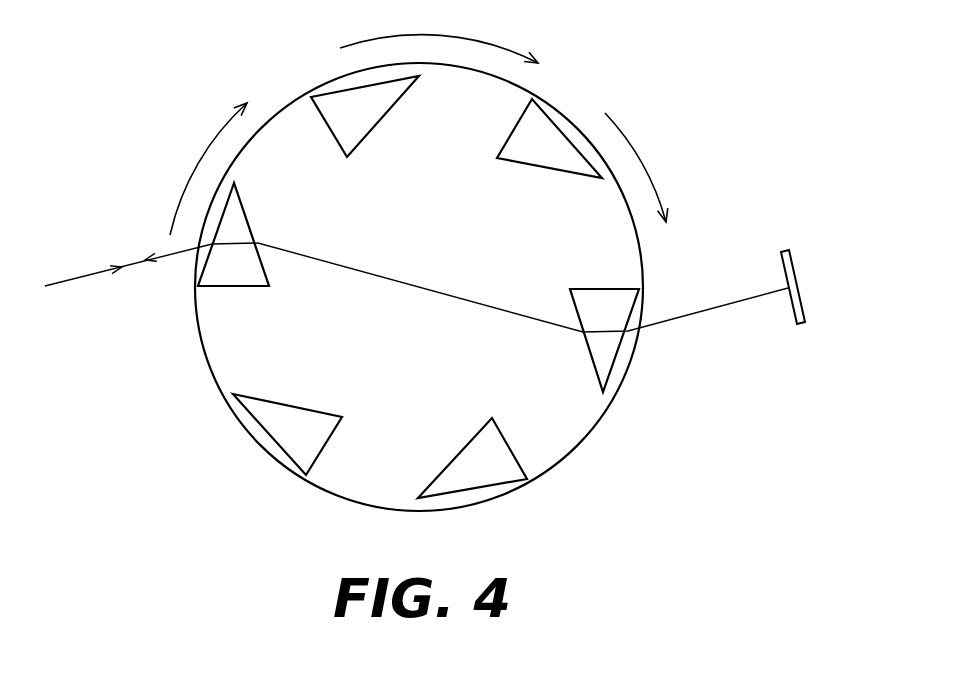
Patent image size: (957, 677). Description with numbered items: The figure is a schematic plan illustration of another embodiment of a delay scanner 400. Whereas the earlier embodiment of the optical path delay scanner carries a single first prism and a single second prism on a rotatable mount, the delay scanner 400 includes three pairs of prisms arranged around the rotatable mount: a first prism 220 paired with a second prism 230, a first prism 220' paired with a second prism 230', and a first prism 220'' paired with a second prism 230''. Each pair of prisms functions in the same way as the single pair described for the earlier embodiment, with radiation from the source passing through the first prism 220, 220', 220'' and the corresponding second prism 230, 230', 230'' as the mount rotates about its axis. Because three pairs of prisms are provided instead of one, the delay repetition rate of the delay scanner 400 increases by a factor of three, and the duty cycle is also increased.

The delay scanner 400 is at (682, 52).
The first prism 220 is at (273, 234).
The first prism 220' is at (386, 125).
The first prism 220'' is at (286, 407).
The second prism 230 is at (564, 340).
The second prism 230' is at (456, 447).
The second prism 230'' is at (537, 169).